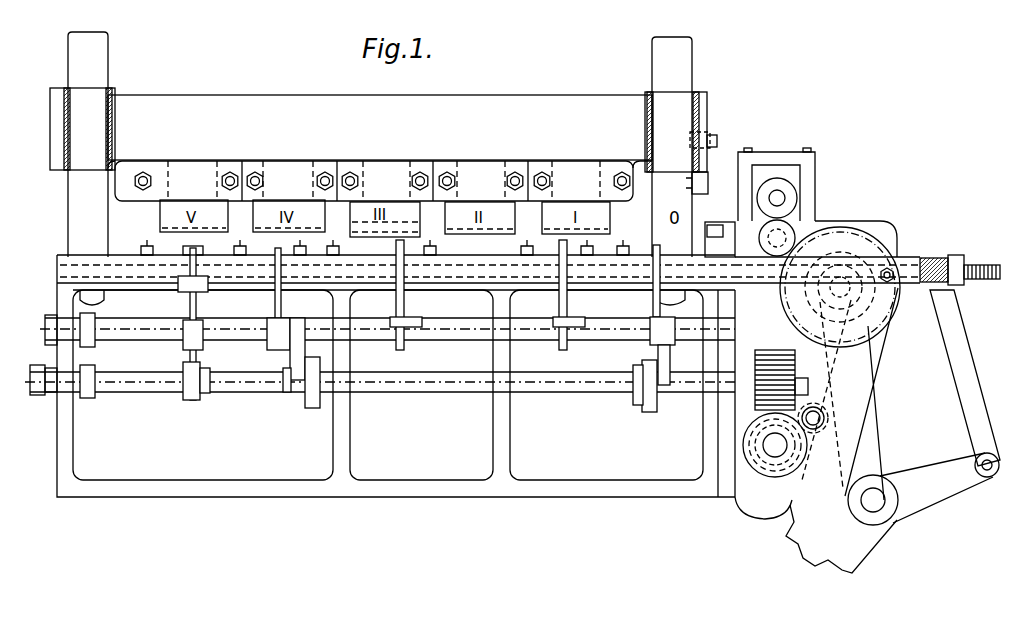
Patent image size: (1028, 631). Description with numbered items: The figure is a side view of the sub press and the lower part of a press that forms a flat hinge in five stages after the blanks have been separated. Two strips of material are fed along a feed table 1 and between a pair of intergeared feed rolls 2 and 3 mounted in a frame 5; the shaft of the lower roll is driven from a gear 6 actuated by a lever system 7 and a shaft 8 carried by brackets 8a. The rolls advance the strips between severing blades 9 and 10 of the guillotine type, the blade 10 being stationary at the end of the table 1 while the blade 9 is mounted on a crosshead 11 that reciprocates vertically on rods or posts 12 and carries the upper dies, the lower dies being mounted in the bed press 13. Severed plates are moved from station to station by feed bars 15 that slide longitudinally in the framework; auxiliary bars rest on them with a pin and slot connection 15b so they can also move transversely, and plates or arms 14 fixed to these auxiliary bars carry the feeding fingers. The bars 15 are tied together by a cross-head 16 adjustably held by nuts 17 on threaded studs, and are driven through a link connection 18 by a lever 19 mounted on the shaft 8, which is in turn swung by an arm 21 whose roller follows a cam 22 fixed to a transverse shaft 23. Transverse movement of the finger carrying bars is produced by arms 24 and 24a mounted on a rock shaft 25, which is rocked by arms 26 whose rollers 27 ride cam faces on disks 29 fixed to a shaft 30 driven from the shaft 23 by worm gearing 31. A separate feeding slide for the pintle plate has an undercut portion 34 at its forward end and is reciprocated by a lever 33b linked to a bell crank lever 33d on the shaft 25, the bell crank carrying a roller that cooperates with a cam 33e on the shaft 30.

The feed table 1 is at (862, 225).
The feed roll 2 is at (798, 198).
The feed roll 3 is at (783, 237).
The frame 5 is at (815, 177).
The gear 6 is at (895, 244).
The lever system 7 is at (858, 296).
The shaft 8 is at (868, 504).
The brackets 8a is at (812, 543).
The severing blade 9 is at (708, 176).
The severing blade 10 is at (710, 227).
The crosshead 11 is at (368, 99).
The rods or posts 12 is at (99, 71).
The bed press 13 is at (84, 257).
The plates or arms 14 is at (146, 250).
The feed bars 15 is at (464, 267).
The pin and slot connection 15b is at (998, 280).
The cross-head 16 is at (975, 262).
The nuts 17 is at (952, 256).
The link connection 18 is at (931, 260).
The lever 19 is at (865, 395).
The arm 21 is at (892, 455).
The cam 22 is at (760, 508).
The shaft 23 is at (760, 445).
The arms 24 is at (348, 302).
The arms 24a is at (276, 300).
The rock shaft 25 is at (459, 339).
The arms 26 is at (288, 354).
The rollers 27 is at (336, 369).
The disks 29 is at (309, 407).
The shaft 30 is at (459, 387).
The worm gearing 31 is at (755, 442).
The lever 33b is at (178, 291).
The bell crank lever 33d is at (183, 346).
The cam 33e is at (184, 396).
The undercut portion 34 is at (193, 248).